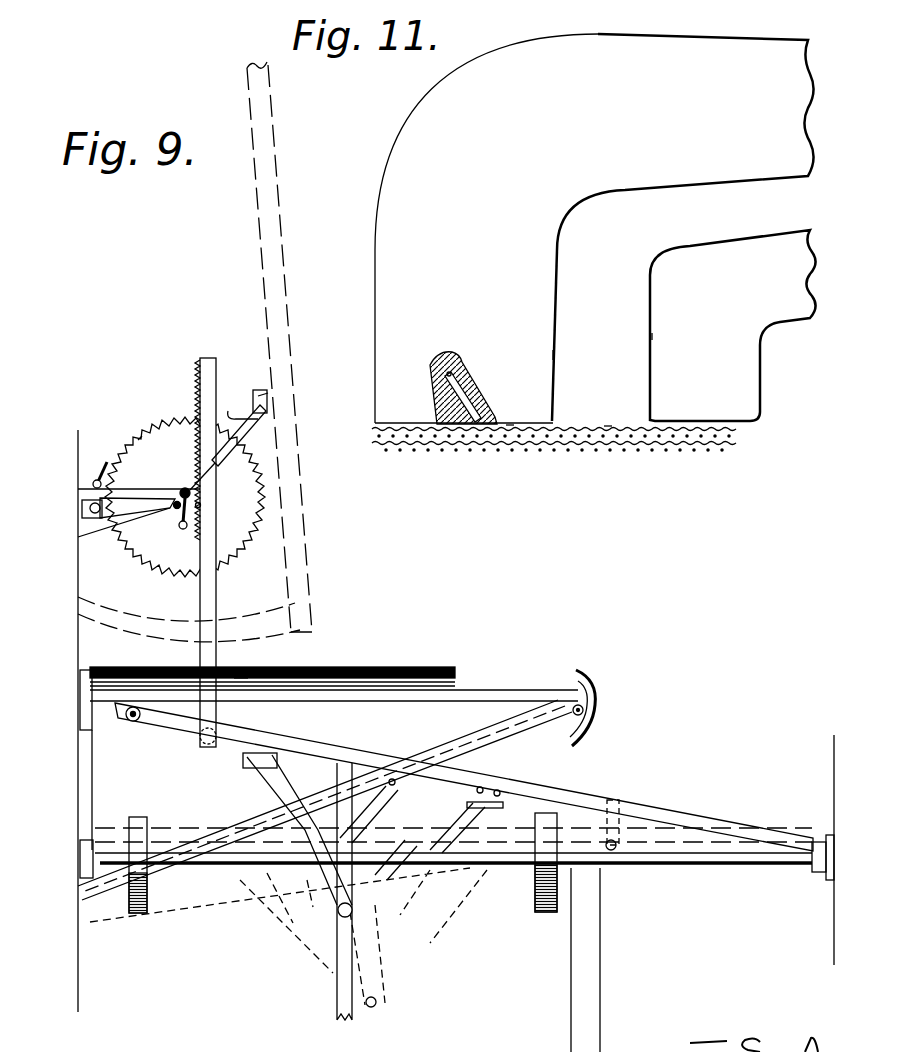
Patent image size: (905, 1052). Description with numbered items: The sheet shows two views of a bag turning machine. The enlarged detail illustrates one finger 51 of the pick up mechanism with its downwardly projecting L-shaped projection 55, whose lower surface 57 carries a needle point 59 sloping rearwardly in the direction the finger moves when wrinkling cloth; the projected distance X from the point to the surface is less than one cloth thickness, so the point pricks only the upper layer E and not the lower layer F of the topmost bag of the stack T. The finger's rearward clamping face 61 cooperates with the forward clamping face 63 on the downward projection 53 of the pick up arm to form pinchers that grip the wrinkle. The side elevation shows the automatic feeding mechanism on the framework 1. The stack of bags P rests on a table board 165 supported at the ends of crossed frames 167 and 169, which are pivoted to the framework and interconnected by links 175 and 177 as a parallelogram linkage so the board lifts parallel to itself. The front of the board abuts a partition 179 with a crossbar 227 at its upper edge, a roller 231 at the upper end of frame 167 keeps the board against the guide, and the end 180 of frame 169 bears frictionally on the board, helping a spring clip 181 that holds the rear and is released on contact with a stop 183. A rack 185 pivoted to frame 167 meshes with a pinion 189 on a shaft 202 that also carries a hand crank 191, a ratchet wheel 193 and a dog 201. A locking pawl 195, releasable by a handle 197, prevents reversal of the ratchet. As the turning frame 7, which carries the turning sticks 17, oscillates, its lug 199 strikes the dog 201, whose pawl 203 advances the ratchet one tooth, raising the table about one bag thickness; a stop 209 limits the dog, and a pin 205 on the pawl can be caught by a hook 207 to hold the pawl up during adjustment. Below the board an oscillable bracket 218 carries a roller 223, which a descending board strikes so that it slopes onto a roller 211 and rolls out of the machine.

In FIG. 9, the framework 1 is at (82, 985).
In FIG. 9, the turning frame 7 is at (258, 258).
In FIG. 9, the turning sticks 17 is at (110, 607).
In FIG. 11, the finger 51 is at (636, 60).
In FIG. 11, the downward projection 53 is at (733, 325).
In FIG. 11, the L-shaped projection 55 is at (540, 303).
In FIG. 11, the lower surface 57 is at (432, 420).
In FIG. 11, the needle point 59 is at (478, 420).
In FIG. 11, the rearward clamping face 61 is at (553, 357).
In FIG. 11, the forward clamping face 63 is at (652, 333).
In FIG. 9, the table board 165 is at (500, 689).
In FIG. 9, the crossed frame 167 is at (292, 744).
In FIG. 9, the crossed frame 169 is at (495, 745).
In FIG. 9, the link 175 is at (392, 818).
In FIG. 9, the link 177 is at (385, 895).
In FIG. 9, the partition 179 is at (96, 760).
In FIG. 9, the end of the frame 180 is at (560, 686).
In FIG. 9, the spring clip 181 is at (592, 702).
In FIG. 9, the stop 183 is at (600, 870).
In FIG. 9, the rack 185 is at (220, 600).
In FIG. 9, the pinion 189 is at (184, 490).
In FIG. 9, the hand crank 191 is at (176, 555).
In FIG. 9, the ratchet wheel 193 is at (140, 438).
In FIG. 9, the locking pawl 195 is at (100, 468).
In FIG. 9, the handle 197 is at (126, 530).
In FIG. 9, the lug 199 is at (267, 393).
In FIG. 9, the dog 201 is at (268, 410).
In FIG. 9, the shaft 202 is at (198, 505).
In FIG. 9, the pawl 203 is at (210, 458).
In FIG. 9, the pin 205 is at (229, 410).
In FIG. 9, the hook 207 is at (214, 372).
In FIG. 9, the stop 209 is at (178, 518).
In FIG. 9, the roller 211 is at (138, 913).
In FIG. 9, the bracket 218 is at (335, 965).
In FIG. 9, the roller 223 is at (237, 774).
In FIG. 9, the crossbar 227 is at (90, 728).
In FIG. 9, the roller 231 is at (157, 728).
In FIG. 11, the upper fabric ply E is at (378, 432).
In FIG. 11, the lower fabric ply F is at (388, 447).
In FIG. 9, the stack of bags P is at (362, 668).
In FIG. 11, the stack T is at (608, 425).
In FIG. 9, the stack T is at (238, 676).
In FIG. 11, the distance X is at (510, 425).